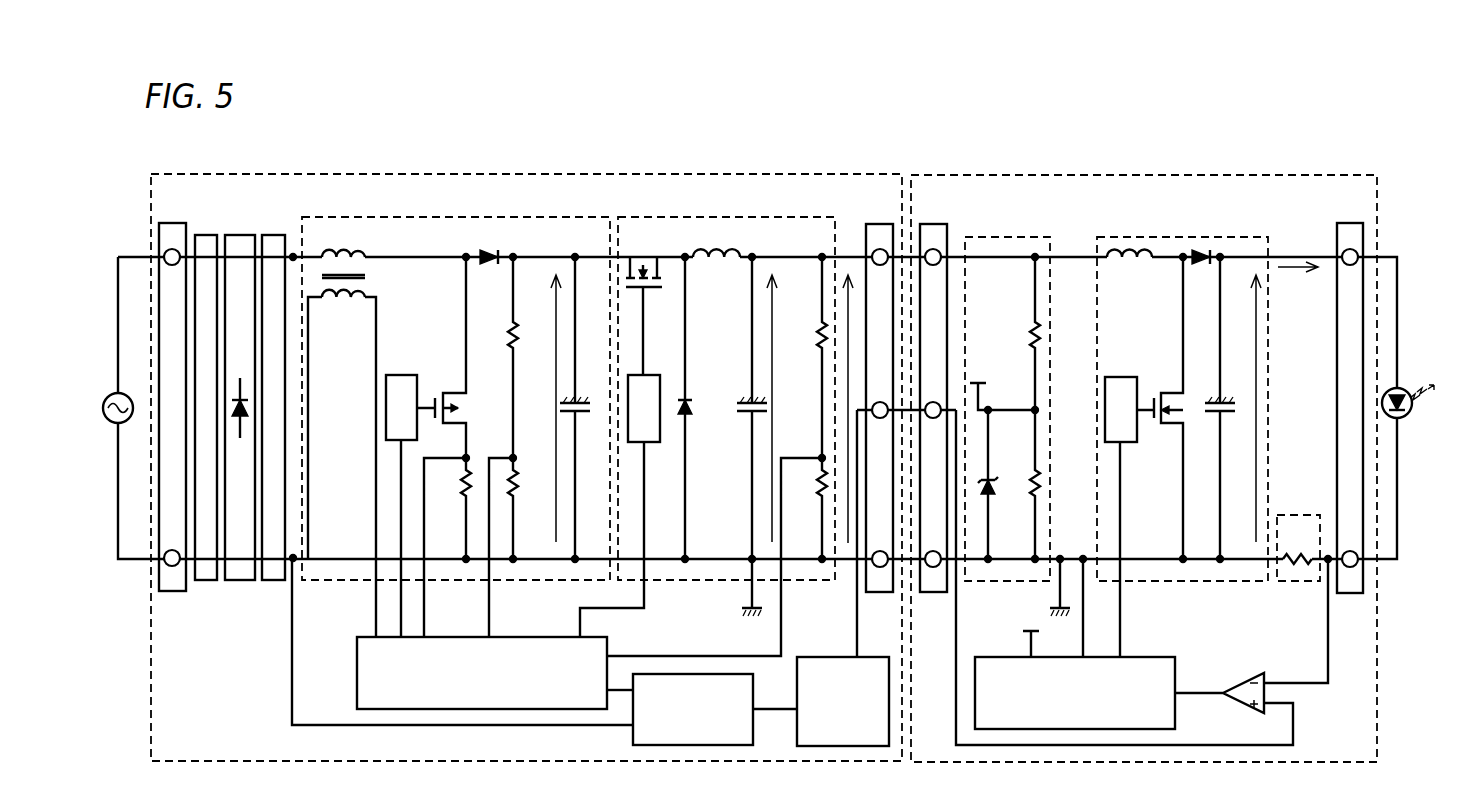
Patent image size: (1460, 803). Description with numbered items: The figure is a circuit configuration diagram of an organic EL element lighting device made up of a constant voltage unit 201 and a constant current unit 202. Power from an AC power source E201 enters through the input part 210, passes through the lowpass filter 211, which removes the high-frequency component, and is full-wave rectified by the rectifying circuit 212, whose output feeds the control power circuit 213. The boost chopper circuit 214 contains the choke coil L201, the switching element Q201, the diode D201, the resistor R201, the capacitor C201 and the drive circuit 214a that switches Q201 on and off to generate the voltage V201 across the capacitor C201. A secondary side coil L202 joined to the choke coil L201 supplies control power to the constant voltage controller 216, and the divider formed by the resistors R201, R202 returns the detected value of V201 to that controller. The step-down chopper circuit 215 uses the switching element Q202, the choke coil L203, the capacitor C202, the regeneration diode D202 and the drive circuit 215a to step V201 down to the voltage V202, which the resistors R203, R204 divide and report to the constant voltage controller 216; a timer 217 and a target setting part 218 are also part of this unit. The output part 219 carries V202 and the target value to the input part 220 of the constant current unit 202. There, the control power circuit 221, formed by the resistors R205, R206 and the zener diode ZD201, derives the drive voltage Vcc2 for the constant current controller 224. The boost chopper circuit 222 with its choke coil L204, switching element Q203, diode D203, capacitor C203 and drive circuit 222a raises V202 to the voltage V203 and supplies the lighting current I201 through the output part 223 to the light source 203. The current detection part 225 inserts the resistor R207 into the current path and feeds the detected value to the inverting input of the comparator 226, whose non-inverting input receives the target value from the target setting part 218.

The constant voltage unit 201 is at (487, 174).
The constant current unit 202 is at (1105, 175).
The light source 203 is at (1408, 418).
The input part 210 is at (175, 228).
The lowpass filter 211 is at (207, 235).
The rectifying circuit 212 is at (241, 235).
The control power circuit 213 is at (272, 235).
The boost chopper circuit 214 is at (426, 217).
The drive circuit 214a is at (402, 375).
The step-down chopper circuit 215 is at (697, 217).
The drive circuit 215a is at (655, 375).
The constant voltage controller 216 is at (357, 668).
The timer 217 is at (753, 690).
The target setting part 218 is at (823, 657).
The output part 219 is at (876, 230).
The input part 220 is at (937, 230).
The control power circuit 221 is at (1007, 237).
The boost chopper circuit 222 is at (1183, 237).
The drive circuit 222a is at (1118, 377).
The output part 223 is at (1348, 230).
The constant current controller 224 is at (1148, 657).
The current detection part 225 is at (1296, 515).
The comparator 226 is at (1250, 681).
The AC power source E201 is at (127, 394).
The choke coil L201 is at (357, 254).
The secondary side coil L202 is at (342, 463).
The choke coil L203 is at (716, 273).
The choke coil L204 is at (1129, 276).
The diode D201 is at (492, 274).
The diode D202 is at (700, 408).
The diode D203 is at (1204, 276).
The switching element Q201 is at (441, 357).
The switching element Q202 is at (644, 301).
The switching element Q203 is at (1160, 408).
The resistor R201 is at (487, 447).
The resistor R202 is at (520, 547).
The resistor R203 is at (806, 357).
The resistor R204 is at (717, 557).
The resistor R205 is at (1018, 333).
The resistor R206 is at (1020, 484).
The resistor R207 is at (1298, 538).
The capacitor C201 is at (585, 408).
The capacitor C202 is at (742, 436).
The capacitor C203 is at (1212, 408).
The zener diode ZD201 is at (1005, 484).
The drive voltage Vcc2 is at (1004, 514).
The voltage V201 is at (541, 408).
The voltage V202 is at (786, 408).
The voltage V203 is at (1243, 408).
The lighting current I201 is at (1298, 284).